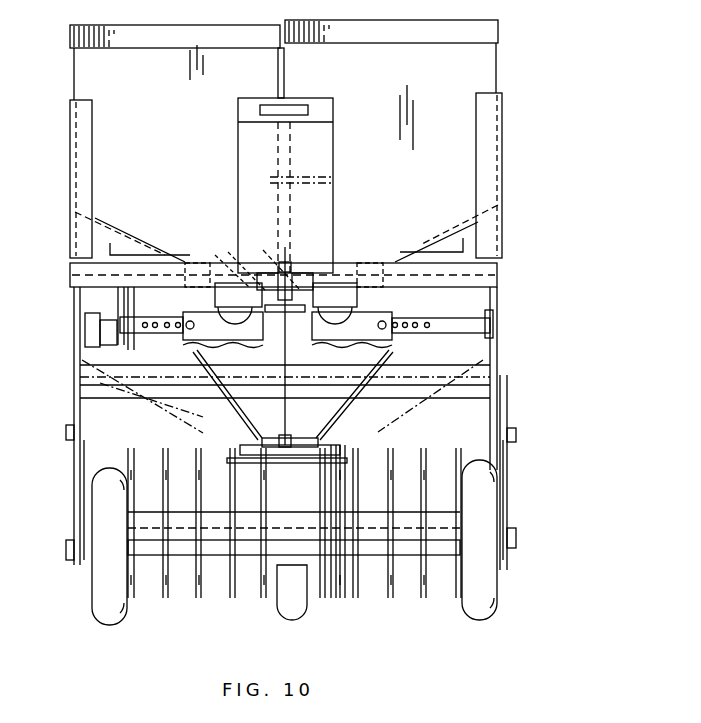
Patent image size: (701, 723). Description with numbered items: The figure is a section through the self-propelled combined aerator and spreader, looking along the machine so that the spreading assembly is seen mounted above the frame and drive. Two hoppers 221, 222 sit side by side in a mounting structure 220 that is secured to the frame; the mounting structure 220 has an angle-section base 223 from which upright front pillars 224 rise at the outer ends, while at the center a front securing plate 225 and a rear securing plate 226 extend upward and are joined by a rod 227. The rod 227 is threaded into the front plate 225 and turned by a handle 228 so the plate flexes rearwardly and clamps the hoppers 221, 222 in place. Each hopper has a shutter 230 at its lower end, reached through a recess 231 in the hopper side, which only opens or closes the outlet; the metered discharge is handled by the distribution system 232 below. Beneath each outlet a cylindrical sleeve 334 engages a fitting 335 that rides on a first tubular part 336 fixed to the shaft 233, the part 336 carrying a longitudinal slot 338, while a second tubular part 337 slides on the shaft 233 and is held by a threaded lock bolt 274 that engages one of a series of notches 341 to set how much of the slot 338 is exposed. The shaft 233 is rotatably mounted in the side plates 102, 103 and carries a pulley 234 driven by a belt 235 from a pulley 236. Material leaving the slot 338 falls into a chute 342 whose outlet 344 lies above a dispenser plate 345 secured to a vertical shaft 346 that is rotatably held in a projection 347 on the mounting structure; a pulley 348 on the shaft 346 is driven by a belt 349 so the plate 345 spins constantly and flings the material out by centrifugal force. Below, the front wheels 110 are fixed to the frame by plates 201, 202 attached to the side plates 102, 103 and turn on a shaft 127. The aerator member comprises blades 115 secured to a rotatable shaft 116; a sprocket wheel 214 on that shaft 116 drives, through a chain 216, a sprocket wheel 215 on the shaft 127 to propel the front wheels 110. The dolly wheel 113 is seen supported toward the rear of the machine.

The hopper 221 is at (80, 75).
The hopper 222 is at (478, 69).
The mounting structure 220 is at (515, 136).
The upright front pillar 224 is at (86, 146).
The front securing plate 225 is at (250, 166).
The rod 227 is at (292, 100).
The handle 228 is at (297, 113).
The rear securing plate 226 is at (258, 193).
The recess 231 is at (128, 242).
The shutter 230 is at (108, 246).
The cylindrical sleeve 334 is at (355, 262).
The longitudinal slot 338 is at (237, 272).
The belt 349 is at (258, 272).
The projection 347 is at (300, 272).
The pulley 348 is at (278, 320).
The vertical shaft 346 is at (230, 422).
The outlet 344 is at (335, 424).
The dispenser plate 345 is at (322, 461).
The fitting 335 is at (237, 320).
The first tubular part 336 is at (344, 320).
The distribution system 232 is at (331, 359).
The base 223 is at (150, 270).
The left pivot bolt 274 is at (184, 343).
The shaft 233 is at (448, 322).
The notches 341 is at (422, 320).
The second tubular part 337 is at (393, 336).
The pulley 236 is at (118, 301).
The belt 235 is at (100, 319).
The pulley 234 is at (132, 362).
The chute 342 is at (165, 405).
The side plate 102 is at (82, 440).
The plate 201 is at (78, 521).
The side plate 103 is at (498, 413).
The plate 202 is at (510, 522).
The front wheel 110 is at (105, 597).
The shaft 127 is at (203, 548).
The blade 115 is at (232, 505).
The rotatable shaft 116 is at (252, 515).
The sprocket wheel 214 is at (342, 485).
The sprocket wheel 215 is at (424, 455).
The chain 216 is at (350, 545).
The dolly wheel 113 is at (290, 603).